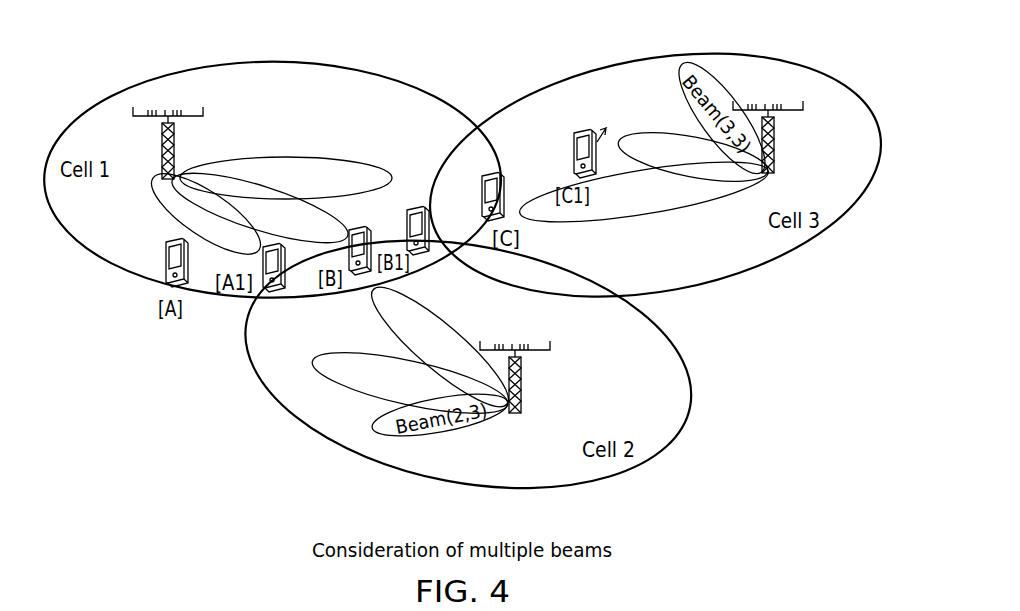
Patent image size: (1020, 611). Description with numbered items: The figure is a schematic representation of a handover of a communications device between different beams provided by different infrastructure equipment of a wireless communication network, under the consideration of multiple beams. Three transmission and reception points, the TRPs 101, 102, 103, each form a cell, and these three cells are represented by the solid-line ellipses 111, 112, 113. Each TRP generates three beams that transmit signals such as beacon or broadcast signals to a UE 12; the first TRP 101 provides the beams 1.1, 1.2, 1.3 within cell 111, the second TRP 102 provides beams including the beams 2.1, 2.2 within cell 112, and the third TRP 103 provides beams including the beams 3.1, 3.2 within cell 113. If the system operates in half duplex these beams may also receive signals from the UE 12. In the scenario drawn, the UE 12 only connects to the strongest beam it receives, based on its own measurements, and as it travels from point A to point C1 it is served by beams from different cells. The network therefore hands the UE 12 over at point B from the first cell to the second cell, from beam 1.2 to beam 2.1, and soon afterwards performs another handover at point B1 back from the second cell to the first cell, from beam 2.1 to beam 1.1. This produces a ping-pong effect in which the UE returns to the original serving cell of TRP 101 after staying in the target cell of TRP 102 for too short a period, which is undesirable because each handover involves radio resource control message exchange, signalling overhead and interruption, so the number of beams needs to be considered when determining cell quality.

The TRP 101 is at (175, 162).
The TRP 102 is at (515, 412).
The TRP 103 is at (775, 153).
The cell 111 is at (380, 78).
The cell 112 is at (390, 467).
The cell 113 is at (723, 282).
The UE 12 is at (160, 250).
The beam 1.1 is at (305, 168).
The beam 1.2 is at (340, 215).
The beam 1.3 is at (168, 222).
The beam 2.1 is at (438, 320).
The beam 2.2 is at (350, 380).
The beam 3.1 is at (627, 217).
The beam 3.2 is at (643, 127).